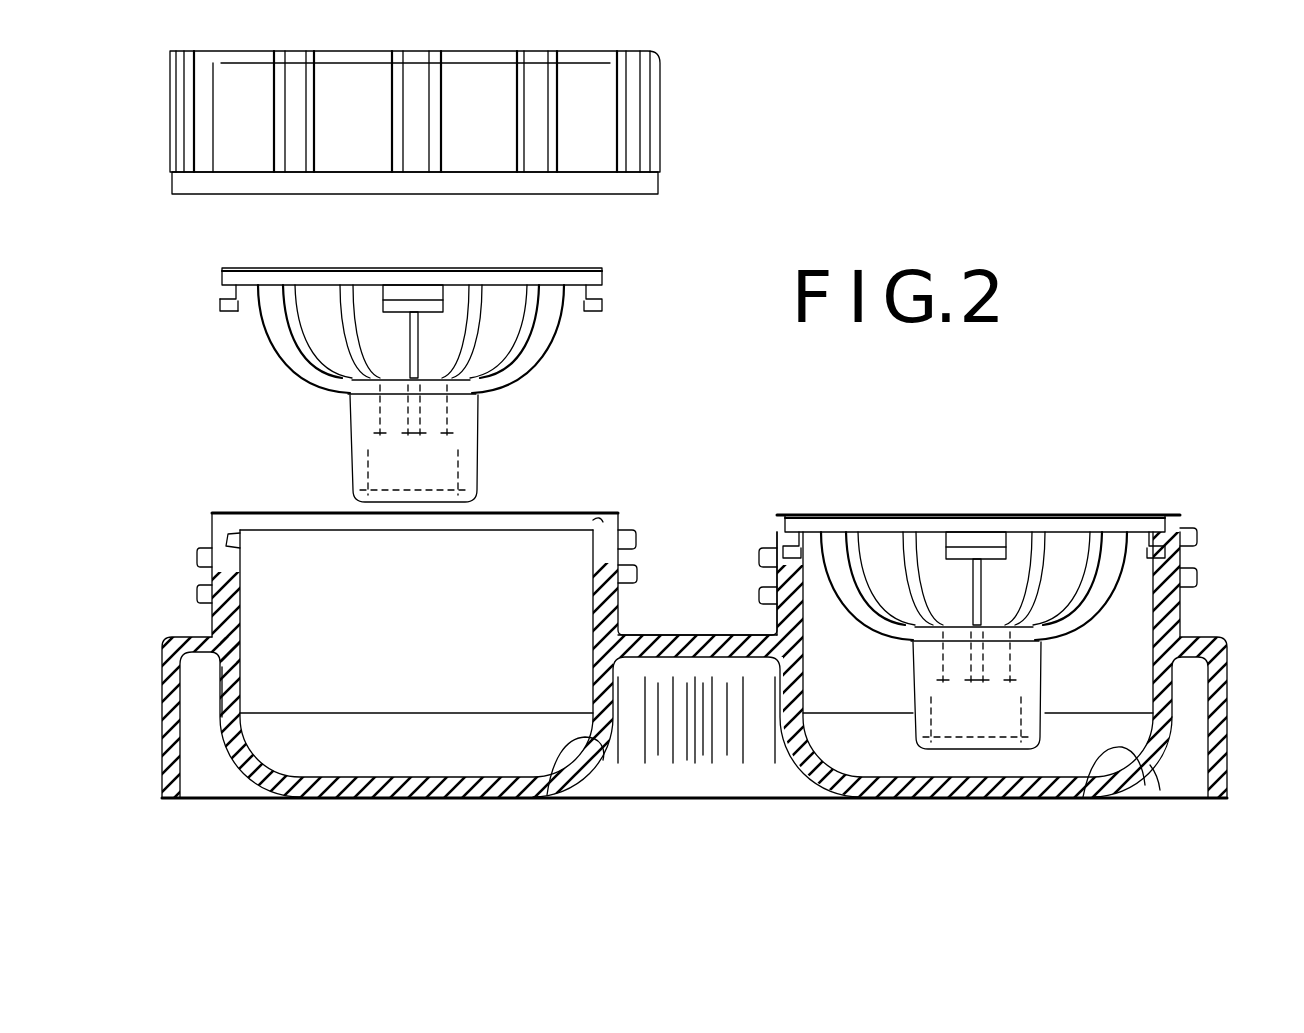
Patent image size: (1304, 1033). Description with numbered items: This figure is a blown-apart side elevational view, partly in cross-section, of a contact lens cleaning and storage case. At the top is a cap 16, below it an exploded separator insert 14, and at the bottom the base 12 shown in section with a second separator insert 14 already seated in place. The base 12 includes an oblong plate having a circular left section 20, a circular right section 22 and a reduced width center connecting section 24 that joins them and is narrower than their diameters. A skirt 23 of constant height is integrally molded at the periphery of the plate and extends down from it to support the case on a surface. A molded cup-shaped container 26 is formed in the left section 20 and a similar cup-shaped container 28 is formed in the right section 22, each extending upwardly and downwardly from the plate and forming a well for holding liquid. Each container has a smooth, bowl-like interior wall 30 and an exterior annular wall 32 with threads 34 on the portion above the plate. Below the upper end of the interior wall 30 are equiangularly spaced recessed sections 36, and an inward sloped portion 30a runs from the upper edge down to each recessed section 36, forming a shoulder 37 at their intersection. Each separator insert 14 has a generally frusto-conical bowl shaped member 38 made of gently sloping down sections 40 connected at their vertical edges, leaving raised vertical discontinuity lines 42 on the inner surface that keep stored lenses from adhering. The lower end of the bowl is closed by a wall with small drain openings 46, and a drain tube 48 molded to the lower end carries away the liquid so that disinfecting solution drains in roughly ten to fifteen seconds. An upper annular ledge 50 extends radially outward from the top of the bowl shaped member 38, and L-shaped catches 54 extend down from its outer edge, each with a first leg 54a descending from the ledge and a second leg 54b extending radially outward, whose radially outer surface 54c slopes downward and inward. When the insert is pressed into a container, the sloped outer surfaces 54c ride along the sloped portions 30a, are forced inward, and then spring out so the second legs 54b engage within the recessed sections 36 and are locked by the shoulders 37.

The base 12 is at (695, 670).
The separator insert 14 is at (649, 547).
The cap 16 is at (665, 111).
The left section 20 is at (190, 637).
The right section 22 is at (1190, 665).
The skirt 23 is at (165, 753).
The center connecting section 24 is at (672, 633).
The cup-shaped container 26 is at (222, 740).
The cup-shaped container 28 is at (1150, 772).
The interior wall 30 is at (549, 795).
The inward sloped portion 30a is at (597, 518).
The exterior annular wall 32 is at (622, 600).
The threads 34 is at (627, 528).
The recessed section 36 is at (593, 553).
The shoulder 37 is at (238, 553).
The bowl shaped member 38 is at (560, 347).
The section 40 is at (320, 302).
The vertical discontinuity line 42 is at (470, 282).
The drain opening 46 is at (445, 417).
The drain tube 48 is at (350, 443).
The upper annular ledge 50 is at (580, 267).
The L-shaped catch 54 is at (403, 305).
The first leg 54a is at (220, 290).
The second leg 54b is at (228, 313).
The radially outer surface 54c is at (220, 308).